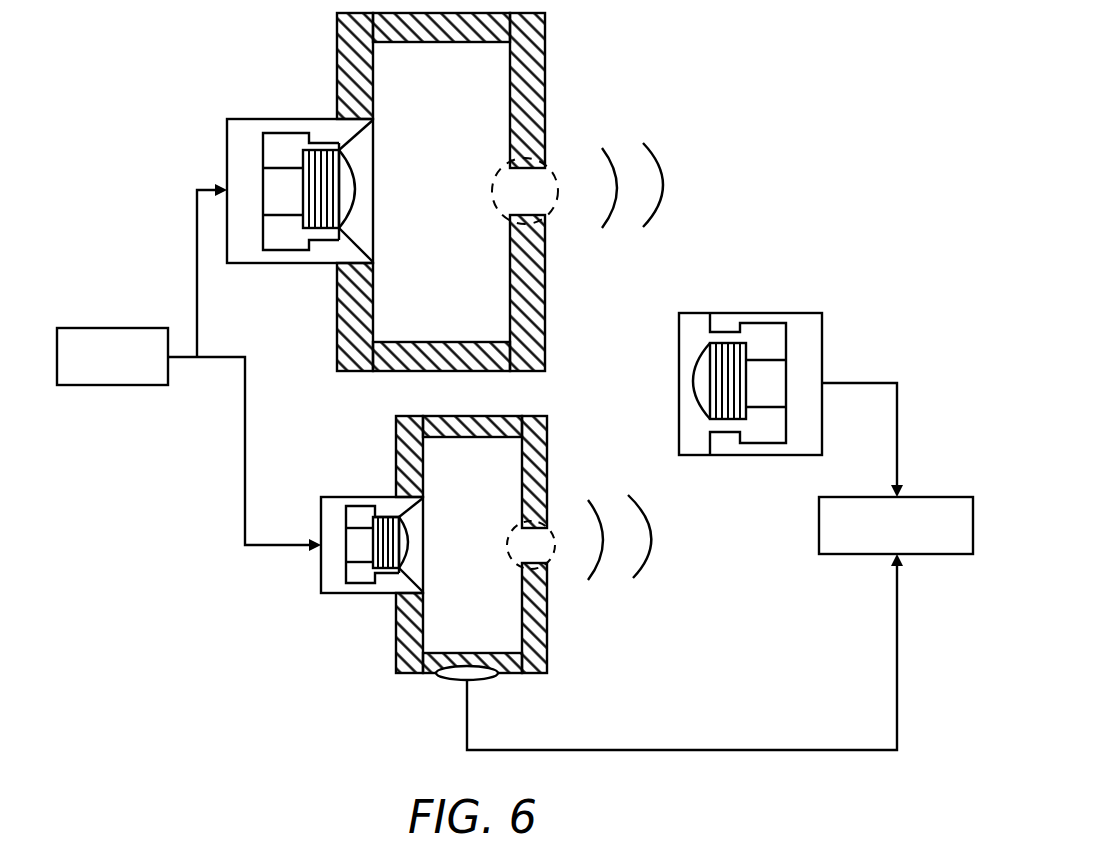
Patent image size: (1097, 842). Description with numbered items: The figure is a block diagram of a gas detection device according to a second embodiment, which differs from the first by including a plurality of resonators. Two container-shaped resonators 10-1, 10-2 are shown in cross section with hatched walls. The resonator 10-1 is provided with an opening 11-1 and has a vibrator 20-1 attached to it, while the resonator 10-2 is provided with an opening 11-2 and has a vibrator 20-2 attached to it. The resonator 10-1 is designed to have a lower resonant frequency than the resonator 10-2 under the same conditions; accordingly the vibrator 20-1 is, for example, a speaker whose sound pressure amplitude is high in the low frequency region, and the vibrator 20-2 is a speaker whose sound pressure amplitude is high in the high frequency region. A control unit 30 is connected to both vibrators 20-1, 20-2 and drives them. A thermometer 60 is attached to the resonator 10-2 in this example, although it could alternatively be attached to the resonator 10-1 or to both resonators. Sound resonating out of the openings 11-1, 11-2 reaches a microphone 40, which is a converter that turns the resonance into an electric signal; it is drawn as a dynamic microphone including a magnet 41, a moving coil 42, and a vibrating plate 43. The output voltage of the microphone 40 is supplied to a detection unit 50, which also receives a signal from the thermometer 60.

The resonator 10-1 is at (548, 48).
The resonator 10-2 is at (550, 447).
The opening 11-1 is at (553, 218).
The opening 11-2 is at (549, 565).
The vibrator 20-1 is at (373, 181).
The vibrator 20-2 is at (425, 537).
The control unit 30 is at (95, 328).
The microphone 40 is at (797, 410).
The magnet 41 is at (739, 444).
The moving coil 42 is at (722, 451).
The vibrating plate 43 is at (725, 436).
The detection unit 50 is at (905, 496).
The thermometer 60 is at (488, 681).